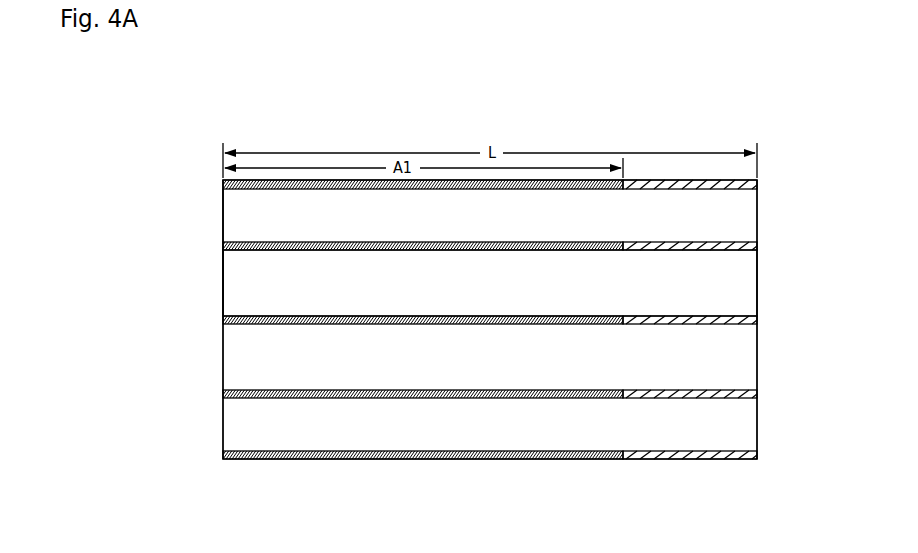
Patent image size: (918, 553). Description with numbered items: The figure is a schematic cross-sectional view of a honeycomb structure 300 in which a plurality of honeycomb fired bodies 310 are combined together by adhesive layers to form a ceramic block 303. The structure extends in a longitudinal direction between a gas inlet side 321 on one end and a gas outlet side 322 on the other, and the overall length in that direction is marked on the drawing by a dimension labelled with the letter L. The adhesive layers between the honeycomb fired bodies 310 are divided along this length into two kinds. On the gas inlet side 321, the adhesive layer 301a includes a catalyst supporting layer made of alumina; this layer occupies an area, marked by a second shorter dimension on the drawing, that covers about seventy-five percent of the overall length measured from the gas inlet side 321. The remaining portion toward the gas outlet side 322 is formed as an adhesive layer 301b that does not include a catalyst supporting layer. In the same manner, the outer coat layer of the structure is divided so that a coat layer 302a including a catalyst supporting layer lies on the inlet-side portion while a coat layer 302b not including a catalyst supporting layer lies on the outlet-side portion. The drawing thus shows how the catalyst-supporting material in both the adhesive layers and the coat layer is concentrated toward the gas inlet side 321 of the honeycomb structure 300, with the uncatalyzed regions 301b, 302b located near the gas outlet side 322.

The honeycomb structure 300 is at (525, 118).
The honeycomb fired body 310 is at (740, 363).
The adhesive layer including catalyst supporting layer 301a is at (263, 243).
The adhesive layer not including catalyst supporting layer 301b is at (728, 244).
The coat layer including catalyst supporting layer 302a is at (352, 453).
The coat layer not including catalyst supporting layer 302b is at (722, 455).
The ceramic block 303 is at (221, 258).
The gas inlet side 321 is at (223, 342).
The gas outlet side 322 is at (757, 262).